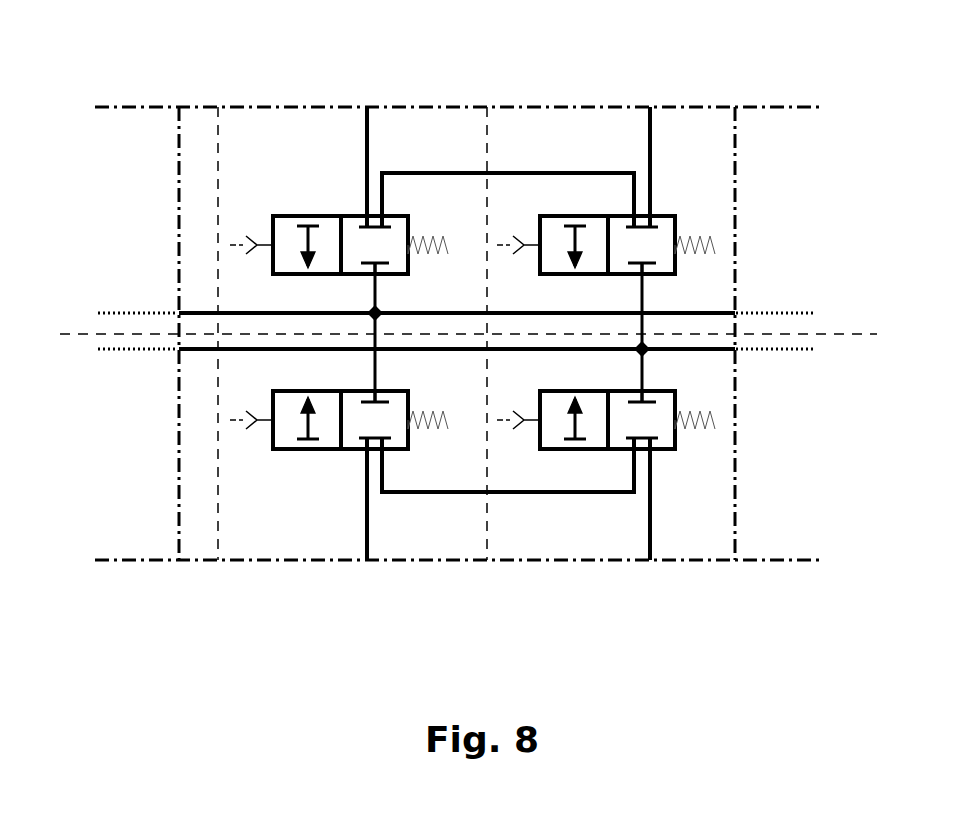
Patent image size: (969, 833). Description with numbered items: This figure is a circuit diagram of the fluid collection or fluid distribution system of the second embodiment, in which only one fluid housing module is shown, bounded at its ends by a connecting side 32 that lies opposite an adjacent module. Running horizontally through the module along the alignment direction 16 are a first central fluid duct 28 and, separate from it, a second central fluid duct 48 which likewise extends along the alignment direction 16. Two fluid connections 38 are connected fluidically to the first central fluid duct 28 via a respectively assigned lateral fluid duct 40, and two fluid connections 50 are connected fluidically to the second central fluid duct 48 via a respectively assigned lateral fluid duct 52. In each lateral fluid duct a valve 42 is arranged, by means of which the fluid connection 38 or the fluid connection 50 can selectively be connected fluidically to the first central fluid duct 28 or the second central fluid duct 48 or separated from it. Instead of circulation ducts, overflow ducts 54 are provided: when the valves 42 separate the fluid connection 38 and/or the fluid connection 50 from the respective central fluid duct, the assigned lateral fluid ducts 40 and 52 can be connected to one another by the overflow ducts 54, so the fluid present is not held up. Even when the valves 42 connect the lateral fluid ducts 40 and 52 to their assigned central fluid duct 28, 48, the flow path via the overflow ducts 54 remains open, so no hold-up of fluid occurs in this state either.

The alignment direction 16 is at (856, 318).
The first central fluid duct 28 is at (238, 312).
The connecting side 32 is at (165, 545).
The fluid connection 38 is at (368, 107).
The lateral fluid duct 40 is at (365, 145).
The valve 42 is at (320, 210).
The second central fluid duct 48 is at (705, 350).
The fluid connection 50 is at (650, 107).
The lateral fluid duct 52 is at (652, 150).
The overflow duct 54 is at (535, 173).